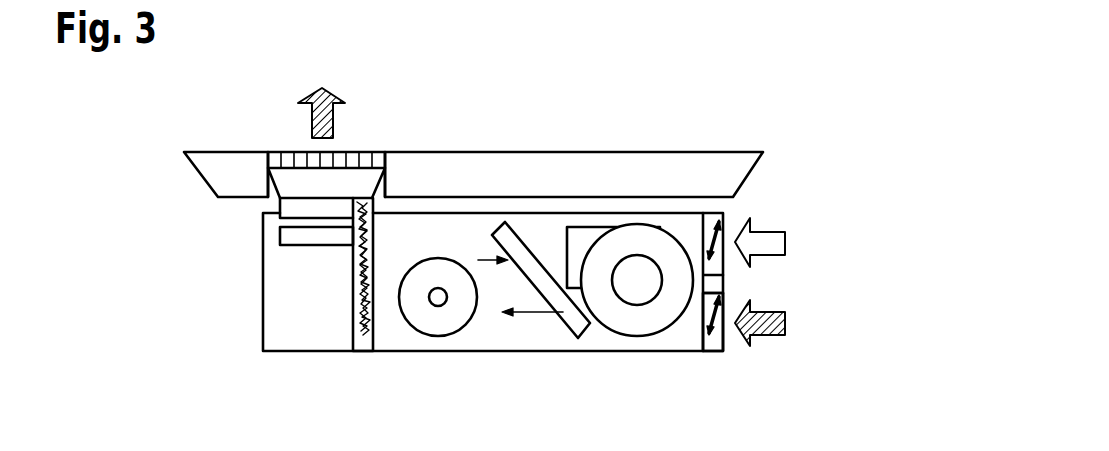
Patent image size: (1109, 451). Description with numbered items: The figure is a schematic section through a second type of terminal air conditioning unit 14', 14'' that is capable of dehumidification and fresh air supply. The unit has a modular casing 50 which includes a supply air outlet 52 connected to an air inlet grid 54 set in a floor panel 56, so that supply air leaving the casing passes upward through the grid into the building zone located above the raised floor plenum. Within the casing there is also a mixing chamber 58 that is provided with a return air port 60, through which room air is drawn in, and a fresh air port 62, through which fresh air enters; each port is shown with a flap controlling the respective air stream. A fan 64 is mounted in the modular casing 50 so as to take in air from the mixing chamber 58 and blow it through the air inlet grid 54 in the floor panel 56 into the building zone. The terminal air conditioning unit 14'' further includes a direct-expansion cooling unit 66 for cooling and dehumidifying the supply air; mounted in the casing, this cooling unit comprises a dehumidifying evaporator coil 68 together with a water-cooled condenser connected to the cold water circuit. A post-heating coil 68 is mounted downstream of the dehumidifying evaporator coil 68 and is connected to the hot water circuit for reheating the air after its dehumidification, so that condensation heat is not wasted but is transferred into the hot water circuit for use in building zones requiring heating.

The terminal air conditioning unit 14' is at (537, 131).
The terminal air conditioning unit 14'' is at (541, 259).
The modular casing 50 is at (398, 352).
The supply air outlet 52 is at (346, 180).
The air inlet grid 54 is at (286, 165).
The floor panel 56 is at (622, 165).
The mixing chamber 58 is at (687, 320).
The return air port 60 is at (727, 217).
The fresh air port 62 is at (727, 295).
The fan 64 is at (637, 240).
The direct-expansion cooling unit 66 is at (457, 232).
The dehumidifying evaporator coil 68 is at (292, 245).